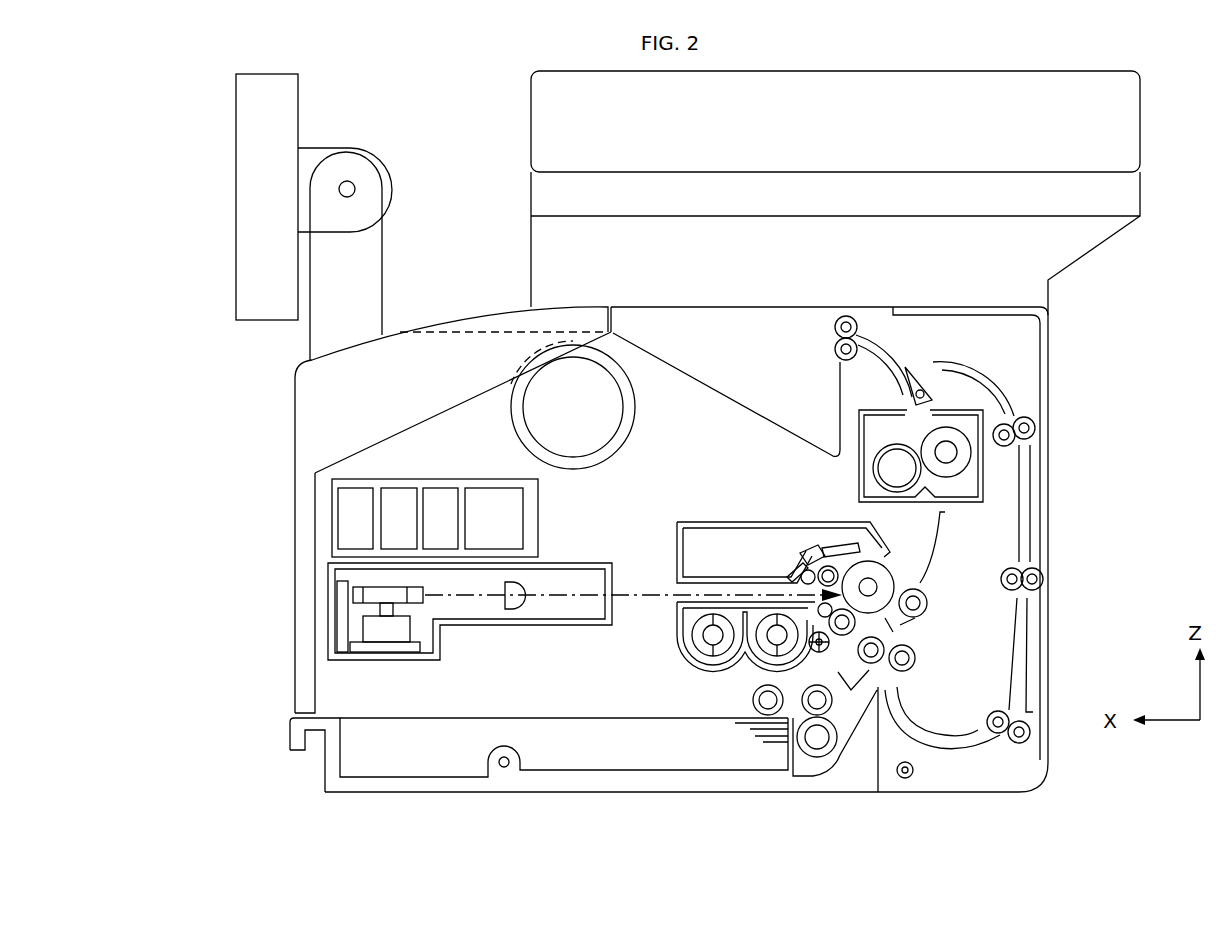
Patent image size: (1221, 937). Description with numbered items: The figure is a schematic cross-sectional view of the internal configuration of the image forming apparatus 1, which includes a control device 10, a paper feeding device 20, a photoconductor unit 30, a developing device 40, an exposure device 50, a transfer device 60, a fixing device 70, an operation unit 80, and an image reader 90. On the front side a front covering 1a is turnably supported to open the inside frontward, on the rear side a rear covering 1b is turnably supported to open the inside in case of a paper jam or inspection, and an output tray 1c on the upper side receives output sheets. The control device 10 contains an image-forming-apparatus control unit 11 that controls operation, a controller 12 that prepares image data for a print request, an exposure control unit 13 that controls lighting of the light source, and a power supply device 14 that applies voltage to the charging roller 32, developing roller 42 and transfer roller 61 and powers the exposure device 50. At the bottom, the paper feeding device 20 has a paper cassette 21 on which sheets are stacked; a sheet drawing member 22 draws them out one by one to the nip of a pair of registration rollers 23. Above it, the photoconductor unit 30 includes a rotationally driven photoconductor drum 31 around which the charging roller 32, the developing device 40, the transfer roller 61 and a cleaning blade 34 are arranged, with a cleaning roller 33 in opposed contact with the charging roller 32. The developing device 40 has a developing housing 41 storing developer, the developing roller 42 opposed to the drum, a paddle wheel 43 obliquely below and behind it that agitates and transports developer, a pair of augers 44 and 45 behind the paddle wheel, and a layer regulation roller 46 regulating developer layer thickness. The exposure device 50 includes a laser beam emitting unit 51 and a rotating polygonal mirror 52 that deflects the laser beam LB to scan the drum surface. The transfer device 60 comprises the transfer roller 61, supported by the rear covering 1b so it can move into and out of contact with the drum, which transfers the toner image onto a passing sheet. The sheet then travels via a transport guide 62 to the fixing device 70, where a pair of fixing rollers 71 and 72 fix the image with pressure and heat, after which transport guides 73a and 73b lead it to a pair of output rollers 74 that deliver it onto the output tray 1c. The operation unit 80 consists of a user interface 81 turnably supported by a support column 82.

The image forming apparatus 1 is at (1170, 137).
The front covering 1a is at (360, 408).
The rear covering 1b is at (1049, 385).
The output tray 1c is at (700, 381).
The control device 10 is at (381, 518).
The image-forming-apparatus control unit 11 is at (430, 533).
The controller 12 is at (345, 533).
The exposure control unit 13 is at (389, 533).
The power supply device 14 is at (484, 533).
The paper feeding device 20 is at (563, 724).
The paper cassette 21 is at (565, 787).
The sheet drawing member 22 is at (740, 700).
The registration rollers 23 is at (907, 650).
The photoconductor unit 30 is at (668, 545).
The photoconductor drum 31 is at (884, 577).
The charging roller 32 is at (835, 555).
The cleaning roller 33 is at (800, 563).
The cleaning blade 34 is at (812, 548).
The developing device 40 is at (741, 621).
The developing housing 41 is at (695, 658).
The developing roller 42 is at (864, 640).
The paddle wheel 43 is at (790, 662).
The auger 44 is at (818, 609).
The auger 45 is at (712, 628).
The layer regulation roller 46 is at (818, 606).
The exposure device 50 is at (412, 620).
The laser beam emitting unit 51 is at (337, 612).
The rotating polygonal mirror 52 is at (376, 592).
The transfer device 60 is at (1020, 606).
The transfer roller 61 is at (921, 612).
The transport guide 62 is at (928, 545).
The fixing device 70 is at (960, 392).
The fixing roller 71 is at (930, 459).
The fixing roller 72 is at (892, 480).
The transport guide 73a is at (888, 368).
The transport guide 73b is at (887, 346).
The output rollers 74 is at (835, 340).
The operation unit 80 is at (296, 217).
The user interface 81 is at (258, 222).
The support column 82 is at (362, 263).
The image reader 90 is at (515, 127).
The laser beam LB is at (622, 582).